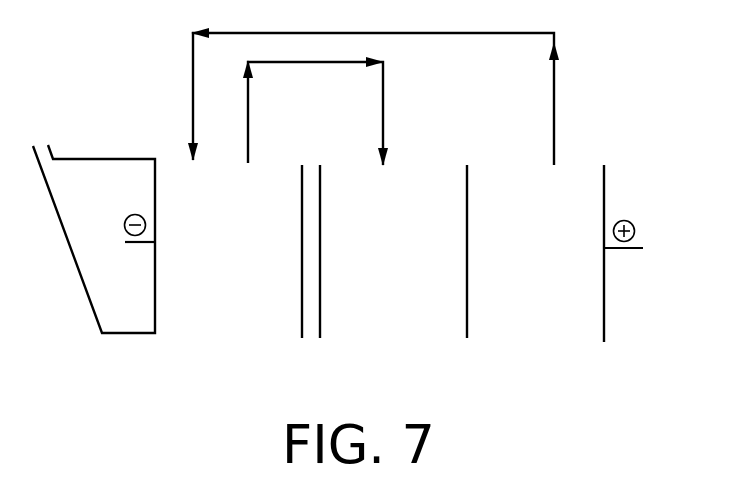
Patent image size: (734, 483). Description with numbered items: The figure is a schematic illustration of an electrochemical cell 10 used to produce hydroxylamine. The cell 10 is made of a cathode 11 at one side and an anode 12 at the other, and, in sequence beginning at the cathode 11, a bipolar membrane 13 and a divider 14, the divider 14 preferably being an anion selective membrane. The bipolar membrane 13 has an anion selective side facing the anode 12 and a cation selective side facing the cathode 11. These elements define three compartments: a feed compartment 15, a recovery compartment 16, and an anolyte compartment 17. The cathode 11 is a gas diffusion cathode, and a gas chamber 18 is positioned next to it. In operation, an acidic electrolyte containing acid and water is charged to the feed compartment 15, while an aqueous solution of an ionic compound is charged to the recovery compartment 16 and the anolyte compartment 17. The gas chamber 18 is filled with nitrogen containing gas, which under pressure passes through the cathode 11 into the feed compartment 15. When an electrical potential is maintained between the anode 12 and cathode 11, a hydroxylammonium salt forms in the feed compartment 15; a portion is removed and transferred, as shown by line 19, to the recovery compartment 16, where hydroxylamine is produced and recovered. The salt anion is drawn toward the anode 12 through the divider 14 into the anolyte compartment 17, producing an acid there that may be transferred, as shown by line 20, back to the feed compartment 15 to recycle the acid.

The electrochemical cell 10 is at (682, 302).
The cathode 11 is at (152, 178).
The anode 12 is at (618, 238).
The bipolar membrane 13 is at (312, 254).
The divider 14 is at (470, 254).
The feed compartment 15 is at (225, 324).
The recovery compartment 16 is at (394, 325).
The anolyte compartment 17 is at (545, 325).
The gas chamber 18 is at (118, 224).
The line 19 is at (385, 87).
The line 20 is at (555, 88).